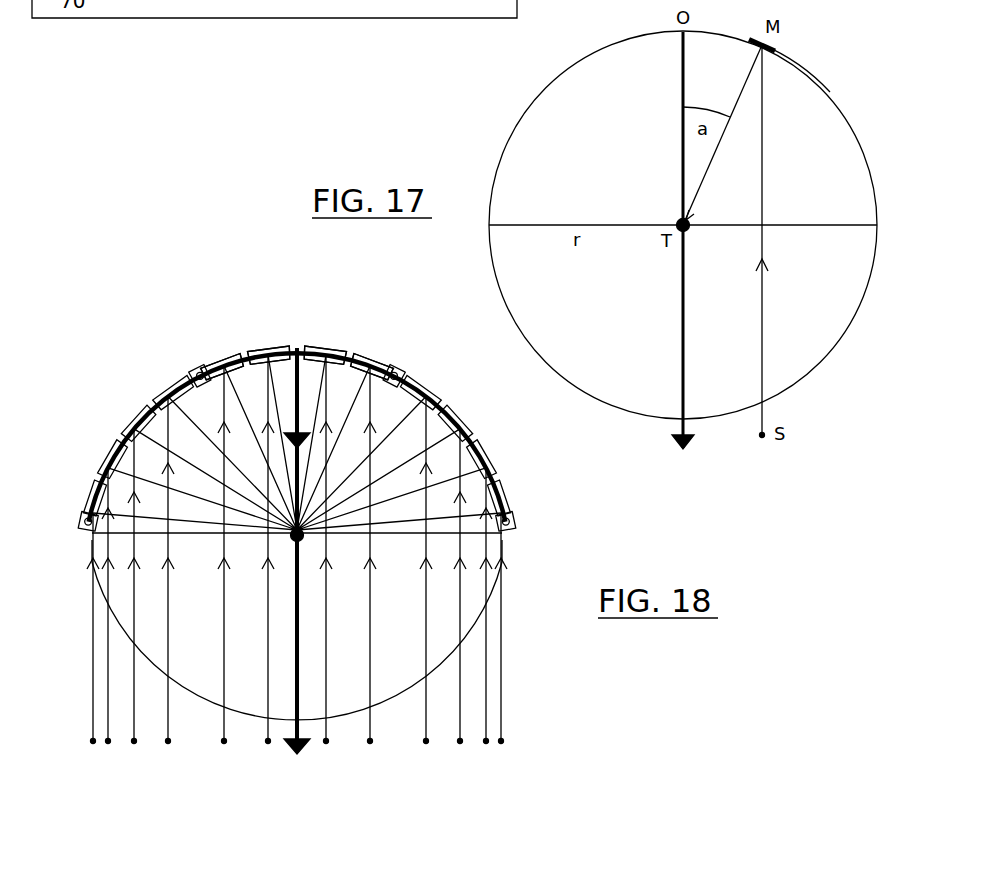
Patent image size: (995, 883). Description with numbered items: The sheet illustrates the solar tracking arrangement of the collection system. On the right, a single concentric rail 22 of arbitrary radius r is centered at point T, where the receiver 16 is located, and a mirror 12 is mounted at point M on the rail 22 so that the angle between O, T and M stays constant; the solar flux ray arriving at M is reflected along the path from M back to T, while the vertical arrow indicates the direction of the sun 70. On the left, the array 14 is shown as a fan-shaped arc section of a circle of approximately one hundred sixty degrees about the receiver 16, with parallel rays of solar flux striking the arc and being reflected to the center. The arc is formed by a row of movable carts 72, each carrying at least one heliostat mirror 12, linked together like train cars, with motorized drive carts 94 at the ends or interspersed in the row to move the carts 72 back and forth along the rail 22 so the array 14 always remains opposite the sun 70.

In FIG. 17, the heliostat mirror 12 is at (465, 408).
In FIG. 18, the heliostat mirror 12 is at (773, 43).
In FIG. 18, the array 14 is at (557, 117).
In FIG. 18, the receiver 16 is at (694, 233).
In FIG. 17, the rail 22 is at (92, 548).
In FIG. 17, the sun 70 is at (297, 565).
In FIG. 18, the sun 70 is at (684, 255).
In FIG. 17, the movable cart 72 is at (322, 343).
In FIG. 18, the movable cart 72 is at (829, 92).
In FIG. 17, the motorized drive cart 94 is at (216, 362).